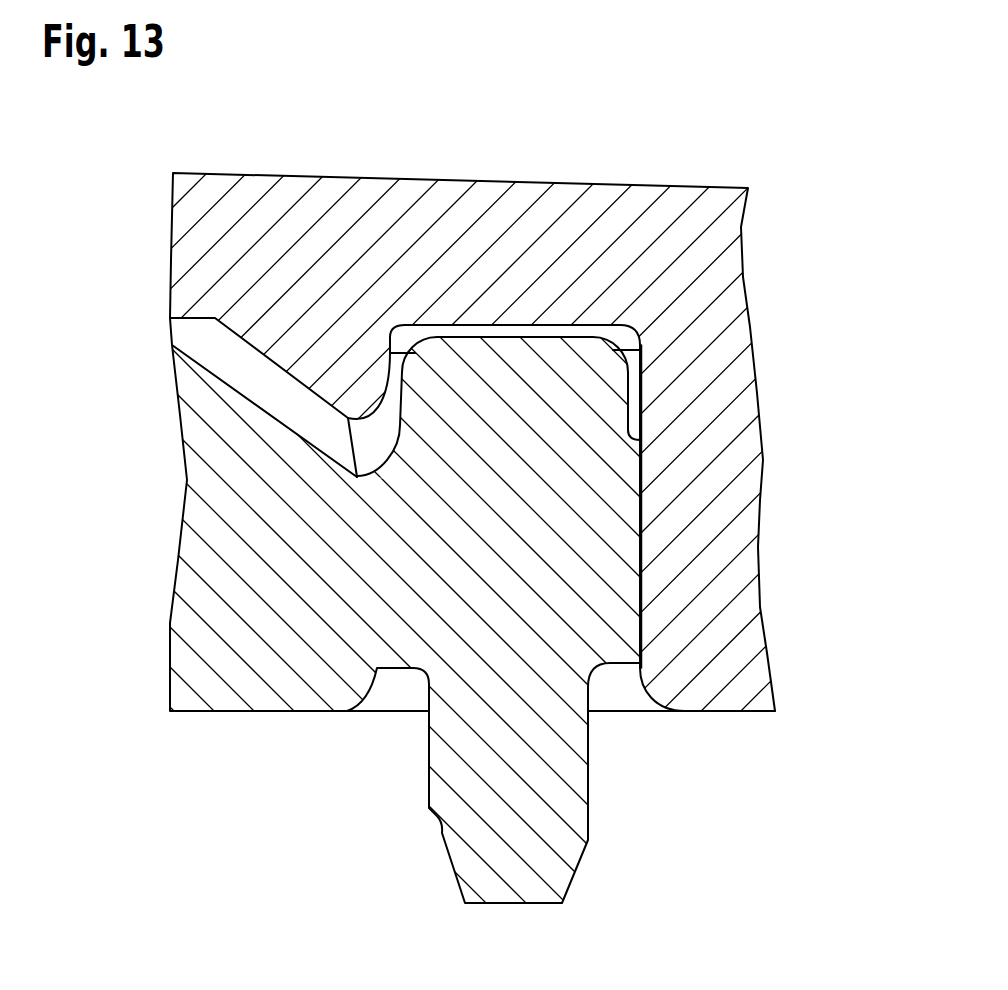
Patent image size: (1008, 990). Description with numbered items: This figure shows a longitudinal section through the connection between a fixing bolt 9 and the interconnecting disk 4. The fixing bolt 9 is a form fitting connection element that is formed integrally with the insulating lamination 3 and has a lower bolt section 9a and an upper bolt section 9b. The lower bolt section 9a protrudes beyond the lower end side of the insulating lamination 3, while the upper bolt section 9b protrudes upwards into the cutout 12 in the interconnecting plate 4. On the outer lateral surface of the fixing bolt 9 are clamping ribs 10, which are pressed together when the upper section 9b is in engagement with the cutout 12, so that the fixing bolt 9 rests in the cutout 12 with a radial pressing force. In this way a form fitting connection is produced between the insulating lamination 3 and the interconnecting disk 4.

The insulating lamination 3 is at (244, 682).
The interconnecting disk 4 is at (700, 332).
The fixing bolt 9 is at (504, 495).
The lower bolt section 9a is at (553, 868).
The upper bolt section 9b is at (528, 605).
The clamping ribs 10 is at (643, 552).
The cutout 12 is at (638, 680).